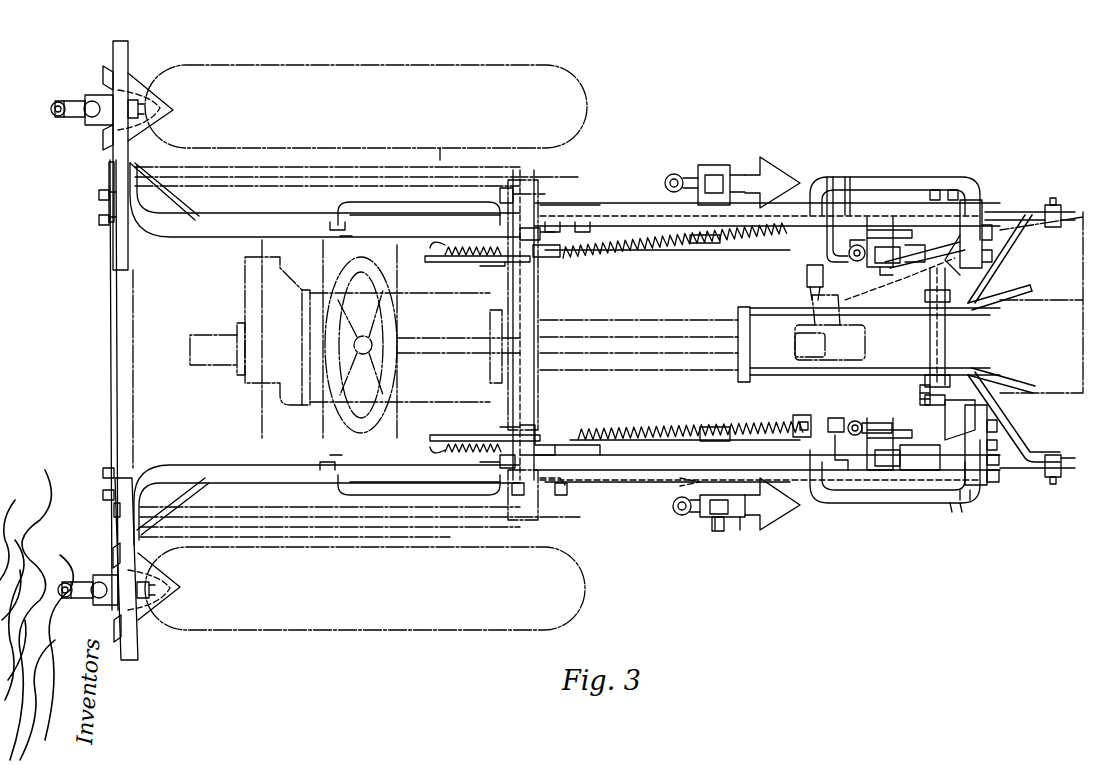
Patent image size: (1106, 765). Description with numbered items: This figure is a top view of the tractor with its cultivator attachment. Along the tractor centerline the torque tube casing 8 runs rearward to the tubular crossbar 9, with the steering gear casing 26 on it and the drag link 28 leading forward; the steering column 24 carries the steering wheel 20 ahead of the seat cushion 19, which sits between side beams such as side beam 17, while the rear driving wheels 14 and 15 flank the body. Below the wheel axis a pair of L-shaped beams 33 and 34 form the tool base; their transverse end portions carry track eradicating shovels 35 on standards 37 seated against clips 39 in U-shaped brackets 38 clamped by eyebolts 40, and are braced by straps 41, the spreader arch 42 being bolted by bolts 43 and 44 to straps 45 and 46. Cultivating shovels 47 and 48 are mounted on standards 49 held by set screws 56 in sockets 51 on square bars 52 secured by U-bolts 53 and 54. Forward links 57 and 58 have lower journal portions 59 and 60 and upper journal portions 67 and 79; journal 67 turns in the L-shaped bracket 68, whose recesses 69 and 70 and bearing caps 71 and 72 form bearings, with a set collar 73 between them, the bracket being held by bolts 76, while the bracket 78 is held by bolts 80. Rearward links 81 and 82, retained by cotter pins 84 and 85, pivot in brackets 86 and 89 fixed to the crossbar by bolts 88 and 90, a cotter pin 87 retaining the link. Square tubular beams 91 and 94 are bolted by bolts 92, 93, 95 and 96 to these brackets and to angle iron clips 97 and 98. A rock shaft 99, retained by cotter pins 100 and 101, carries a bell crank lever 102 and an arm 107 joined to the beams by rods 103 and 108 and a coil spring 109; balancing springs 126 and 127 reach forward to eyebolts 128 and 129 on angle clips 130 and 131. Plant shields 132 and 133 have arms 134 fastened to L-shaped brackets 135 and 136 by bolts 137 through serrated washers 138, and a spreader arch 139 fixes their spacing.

The torque tube casing 8 is at (658, 364).
The tubular crossbar 9 is at (538, 393).
The rear driving wheel 14 is at (450, 65).
The rear driving wheel 15 is at (430, 627).
The side beam 17 is at (475, 177).
The seat cushion 19 is at (262, 426).
The steering wheel 20 is at (397, 315).
The steering column 24 is at (453, 353).
The steering gear casing 26 is at (866, 348).
The drag link 28 is at (1080, 220).
The beam 33 is at (226, 465).
The beam 34 is at (168, 237).
The shovel 35 is at (170, 112).
The standard 37 is at (82, 103).
The U-shaped bracket 38 is at (103, 74).
The clip 39 is at (96, 125).
The eyebolt 40 is at (85, 117).
The strap 41 is at (188, 212).
The spreader arch 42 is at (110, 414).
The bolt 43 is at (103, 495).
The bolt 44 is at (99, 220).
The strap 45 is at (115, 515).
The strap 46 is at (108, 173).
The shovel 47 is at (776, 170).
The shovel 48 is at (948, 272).
The standard 49 is at (725, 517).
The socket 51 is at (718, 170).
The square bar 52 is at (712, 427).
The U-bolt 53 is at (690, 238).
The U-bolt 54 is at (672, 428).
The set screw 56 is at (714, 531).
The forward link 57 is at (930, 503).
The forward link 58 is at (870, 177).
The journal portion 59 is at (797, 415).
The journal portion 60 is at (807, 282).
The journal portion 67 is at (994, 420).
The L-shaped bracket 68 is at (978, 408).
The semicylindrical recess 69 is at (975, 490).
The semicylindrical recess 70 is at (962, 427).
The bearing cap 71 is at (999, 470).
The bearing cap 72 is at (997, 440).
The set collar 73 is at (999, 455).
The bolt 76 is at (922, 395).
The bracket 78 is at (490, 523).
The journal portion 79 is at (990, 300).
The bolt 80 is at (920, 278).
The rearward link 81 is at (442, 487).
The rearward link 82 is at (445, 202).
The cotter pin 84 is at (355, 462).
The cotter pin 85 is at (345, 230).
The bracket 86 is at (540, 450).
The cotter pin 87 is at (500, 463).
The bolt 88 is at (540, 430).
The bracket 89 is at (546, 236).
The bolt 90 is at (546, 250).
The square tubular beam 91 is at (575, 482).
The bolt 92 is at (561, 495).
The bolt 93 is at (958, 508).
The square tubular beam 94 is at (630, 203).
The bolt 95 is at (578, 220).
The bolt 96 is at (950, 190).
The angle iron clip 97 is at (920, 453).
The angle iron clip 98 is at (932, 190).
The rock shaft 99 is at (534, 310).
The cotter pin 100 is at (528, 495).
The cotter pin 101 is at (520, 215).
The bell crank lever 102 is at (470, 435).
The rod 103 is at (440, 450).
The arm 107 is at (455, 262).
The rod 108 is at (440, 246).
The coil spring 109 is at (490, 266).
The balancing spring 126 is at (598, 428).
The balancing spring 127 is at (618, 260).
The eyebolt 128 is at (832, 425).
The eyebolt 129 is at (822, 195).
The angle clip 130 is at (848, 435).
The angle clip 131 is at (846, 177).
The plant shield 132 is at (1030, 386).
The plant shield 133 is at (1020, 292).
The arm 134 is at (1004, 235).
The L-shaped bracket 135 is at (1020, 468).
The L-shaped bracket 136 is at (1035, 205).
The bolt 137 is at (1058, 200).
The serrated washers 138 is at (1075, 215).
The spreader arch 139 is at (738, 330).